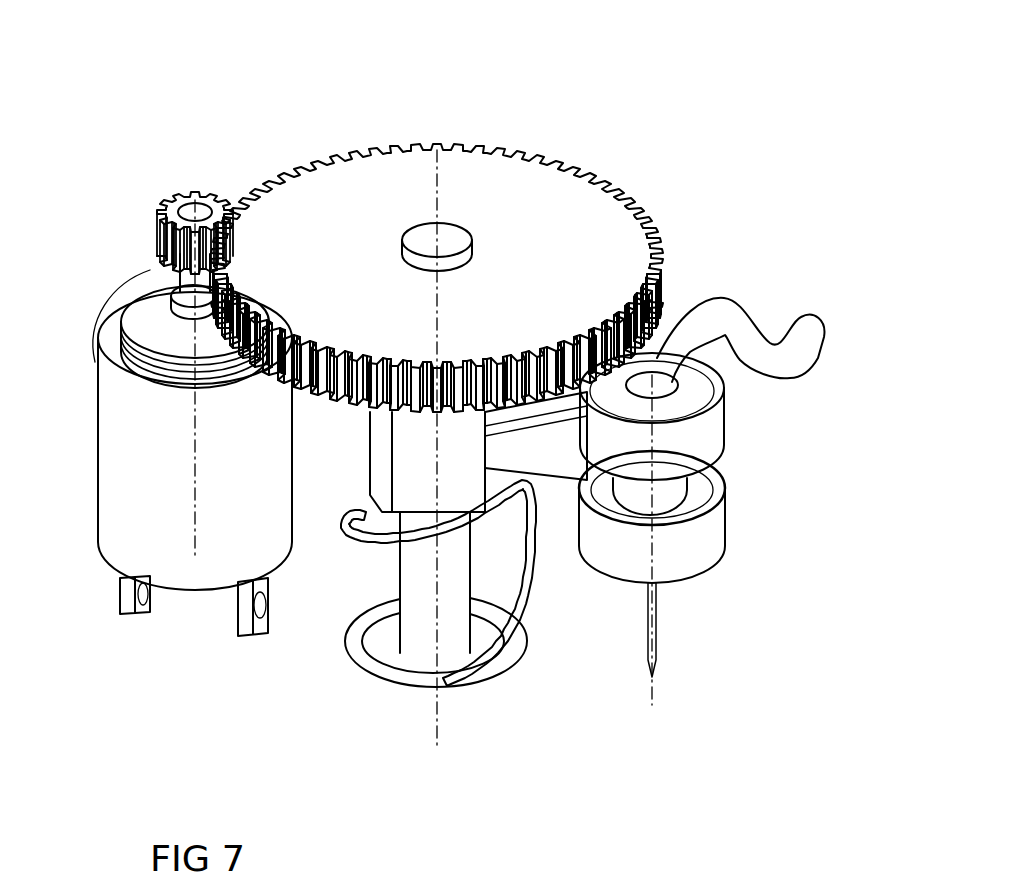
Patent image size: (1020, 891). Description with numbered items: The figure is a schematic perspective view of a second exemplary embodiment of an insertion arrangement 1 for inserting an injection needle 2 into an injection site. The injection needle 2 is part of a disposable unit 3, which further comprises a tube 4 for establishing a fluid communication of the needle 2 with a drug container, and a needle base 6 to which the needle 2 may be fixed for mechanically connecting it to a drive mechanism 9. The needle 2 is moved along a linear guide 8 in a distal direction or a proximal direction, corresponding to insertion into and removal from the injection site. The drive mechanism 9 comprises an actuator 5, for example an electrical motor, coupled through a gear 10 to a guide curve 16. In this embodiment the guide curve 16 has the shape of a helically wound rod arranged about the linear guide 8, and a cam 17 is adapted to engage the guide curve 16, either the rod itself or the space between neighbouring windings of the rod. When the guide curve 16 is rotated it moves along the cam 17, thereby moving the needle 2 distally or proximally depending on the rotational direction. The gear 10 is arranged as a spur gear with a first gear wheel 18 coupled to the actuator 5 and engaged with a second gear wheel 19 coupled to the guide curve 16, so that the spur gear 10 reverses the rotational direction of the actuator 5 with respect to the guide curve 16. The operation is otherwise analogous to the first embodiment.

The insertion arrangement 1 is at (593, 107).
The injection needle 2 is at (656, 655).
The disposable unit 3 is at (739, 487).
The tube 4 is at (796, 358).
The actuator 5 is at (118, 368).
The needle base 6 is at (712, 540).
The linear guide 8 is at (423, 640).
The drive mechanism 9 is at (301, 626).
The gear 10 is at (343, 70).
The guide curve 16 is at (488, 640).
The cam 17 is at (566, 458).
The first gear wheel 18 is at (224, 194).
The second gear wheel 19 is at (335, 175).